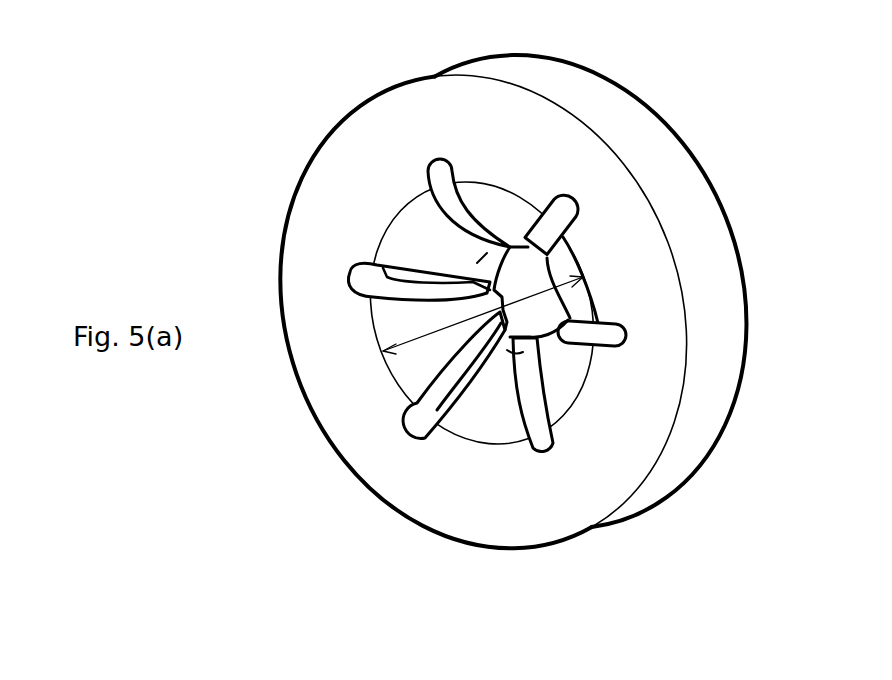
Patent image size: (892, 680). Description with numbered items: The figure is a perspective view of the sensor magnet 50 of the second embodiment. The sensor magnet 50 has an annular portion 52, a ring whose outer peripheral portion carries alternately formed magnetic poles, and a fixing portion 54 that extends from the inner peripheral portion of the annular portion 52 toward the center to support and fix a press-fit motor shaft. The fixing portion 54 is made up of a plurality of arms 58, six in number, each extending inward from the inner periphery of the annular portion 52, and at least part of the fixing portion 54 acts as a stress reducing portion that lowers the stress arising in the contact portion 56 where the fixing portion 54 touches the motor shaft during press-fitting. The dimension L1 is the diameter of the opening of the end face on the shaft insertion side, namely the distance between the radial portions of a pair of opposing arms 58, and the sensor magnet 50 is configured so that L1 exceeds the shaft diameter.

The sensor magnet 50 is at (505, 320).
The annular portion 52 is at (607, 193).
The fixing portion 54 is at (565, 378).
The contact portion 56 is at (547, 268).
The arms 58 is at (491, 205).
The diameter of the opening of the end face on the motor shaft insertion side L1 is at (396, 345).